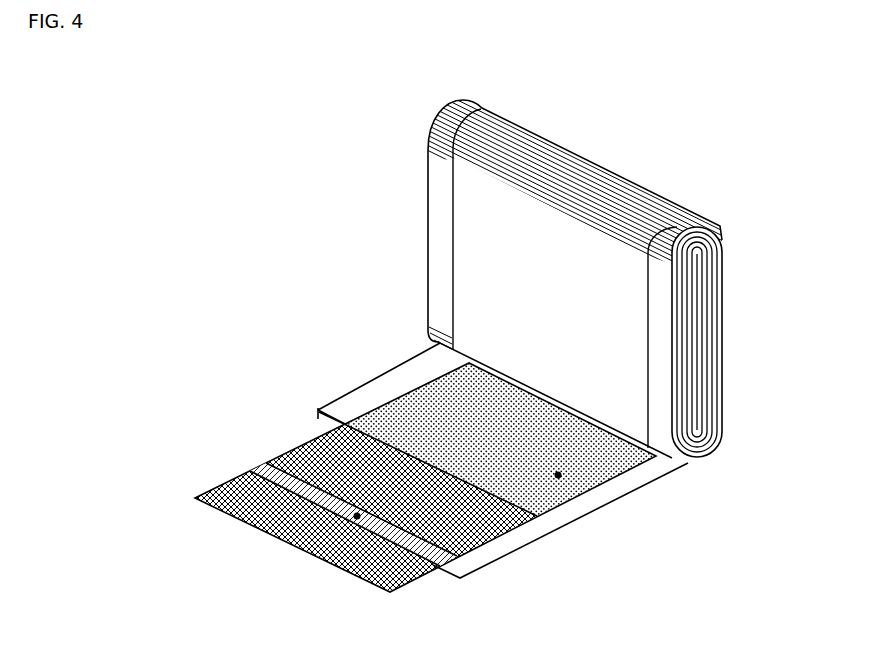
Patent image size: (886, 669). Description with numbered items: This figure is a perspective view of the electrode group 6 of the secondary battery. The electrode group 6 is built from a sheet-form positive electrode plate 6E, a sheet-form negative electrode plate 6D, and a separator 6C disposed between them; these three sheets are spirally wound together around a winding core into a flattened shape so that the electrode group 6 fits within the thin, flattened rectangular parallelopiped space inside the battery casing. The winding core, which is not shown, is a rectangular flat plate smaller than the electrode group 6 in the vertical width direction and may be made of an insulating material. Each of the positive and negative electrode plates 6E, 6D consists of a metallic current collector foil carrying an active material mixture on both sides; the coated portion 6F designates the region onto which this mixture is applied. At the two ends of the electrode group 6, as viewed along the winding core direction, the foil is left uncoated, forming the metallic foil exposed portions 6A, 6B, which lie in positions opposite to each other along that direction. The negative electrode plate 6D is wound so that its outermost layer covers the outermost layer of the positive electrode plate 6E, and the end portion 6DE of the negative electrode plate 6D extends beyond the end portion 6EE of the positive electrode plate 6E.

The electrode group 6 is at (549, 289).
The metallic foil exposed portion 6A is at (437, 228).
The metallic foil exposed portion 6B is at (662, 343).
The separator 6C is at (310, 438).
The negative electrode plate 6D is at (264, 467).
The positive electrode plate 6E is at (384, 383).
The end portion of the positive electrode plate 6EE is at (306, 418).
The coated portion 6F is at (357, 516).
The end portion of the negative electrode plate 6DE is at (445, 578).